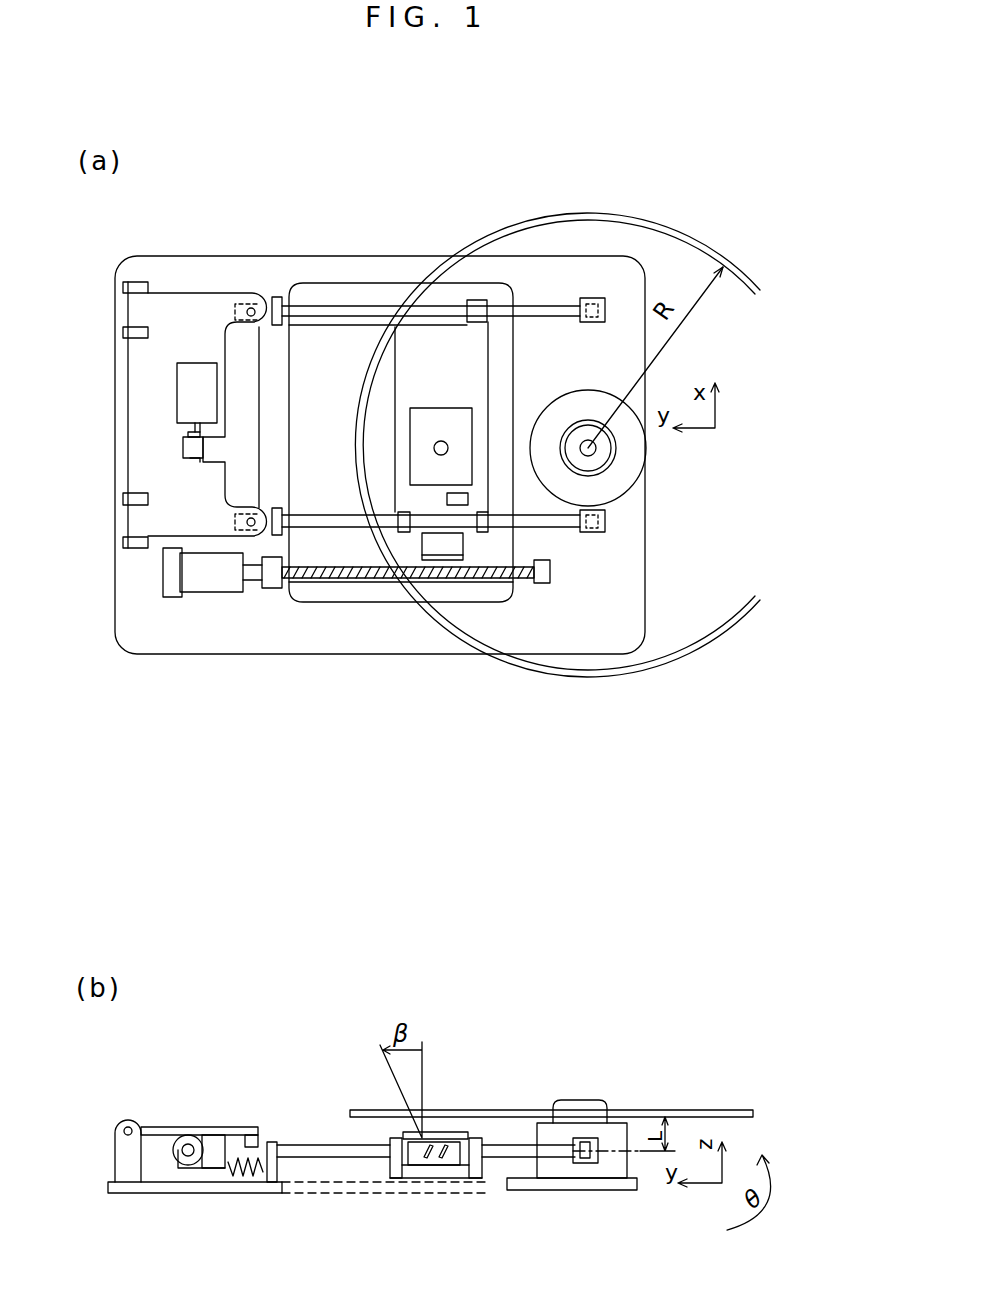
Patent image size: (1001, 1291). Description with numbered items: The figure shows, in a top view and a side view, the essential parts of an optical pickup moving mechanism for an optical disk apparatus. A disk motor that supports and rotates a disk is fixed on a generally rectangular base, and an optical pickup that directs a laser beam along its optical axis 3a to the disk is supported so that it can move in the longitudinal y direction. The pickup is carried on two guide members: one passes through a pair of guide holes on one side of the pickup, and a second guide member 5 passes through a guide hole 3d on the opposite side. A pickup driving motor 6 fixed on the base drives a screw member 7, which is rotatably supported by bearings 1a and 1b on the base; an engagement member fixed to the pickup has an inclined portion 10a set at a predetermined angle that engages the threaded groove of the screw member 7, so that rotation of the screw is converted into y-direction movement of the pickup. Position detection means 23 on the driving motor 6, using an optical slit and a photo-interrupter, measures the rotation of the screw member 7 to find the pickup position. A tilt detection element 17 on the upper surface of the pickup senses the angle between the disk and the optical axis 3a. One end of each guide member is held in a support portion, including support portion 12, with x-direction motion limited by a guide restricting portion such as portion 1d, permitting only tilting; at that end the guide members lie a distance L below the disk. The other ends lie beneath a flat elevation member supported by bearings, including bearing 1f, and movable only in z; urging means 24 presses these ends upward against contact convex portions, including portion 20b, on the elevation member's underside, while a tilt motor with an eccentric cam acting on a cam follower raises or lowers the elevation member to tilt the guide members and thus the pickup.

The bearing 1a is at (550, 585).
The bearing 1b is at (270, 590).
The guide restricting portion 1d is at (277, 297).
The bearing 1f is at (118, 256).
The optical axis 3a is at (433, 1132).
The guide hole 3d is at (470, 300).
The guide member 5 is at (318, 300).
The pickup driving motor 6 is at (218, 592).
The screw member 7 is at (382, 580).
The inclined portion 10a is at (425, 1148).
The support portion 12 is at (595, 298).
The tilt detection element 17 is at (447, 505).
The contact convex portion 20b is at (250, 306).
The position detection means 23 is at (168, 592).
The urging means 24 is at (248, 1180).